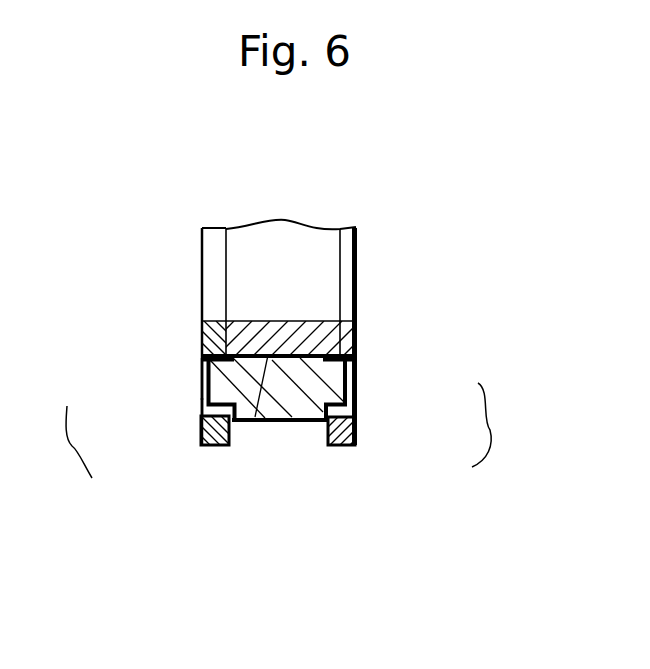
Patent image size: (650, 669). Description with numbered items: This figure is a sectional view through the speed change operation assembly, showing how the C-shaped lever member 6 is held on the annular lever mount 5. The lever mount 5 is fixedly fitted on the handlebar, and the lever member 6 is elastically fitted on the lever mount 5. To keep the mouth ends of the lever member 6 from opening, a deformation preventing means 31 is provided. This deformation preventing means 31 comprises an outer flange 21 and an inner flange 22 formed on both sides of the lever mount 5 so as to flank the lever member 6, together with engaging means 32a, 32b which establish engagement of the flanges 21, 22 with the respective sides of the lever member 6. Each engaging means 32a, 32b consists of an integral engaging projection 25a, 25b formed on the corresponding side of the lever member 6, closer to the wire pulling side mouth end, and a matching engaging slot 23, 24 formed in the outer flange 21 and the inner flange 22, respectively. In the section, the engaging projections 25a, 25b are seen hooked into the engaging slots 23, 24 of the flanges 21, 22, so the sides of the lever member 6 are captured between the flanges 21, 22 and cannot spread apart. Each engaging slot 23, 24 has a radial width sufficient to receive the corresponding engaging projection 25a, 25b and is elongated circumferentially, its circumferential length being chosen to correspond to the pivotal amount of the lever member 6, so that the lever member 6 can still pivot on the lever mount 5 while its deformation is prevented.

The lever mount 5 is at (257, 422).
The lever member 6 is at (281, 428).
The outer flange 21 is at (338, 449).
The inner flange 22 is at (213, 449).
The engaging slot 23 is at (358, 410).
The engaging slot 24 is at (202, 412).
The engaging projection 25a is at (357, 385).
The engaging projection 25b is at (202, 383).
The deformation preventing means 31 is at (137, 537).
The engaging means 32a is at (438, 420).
The engaging means 32b is at (131, 427).